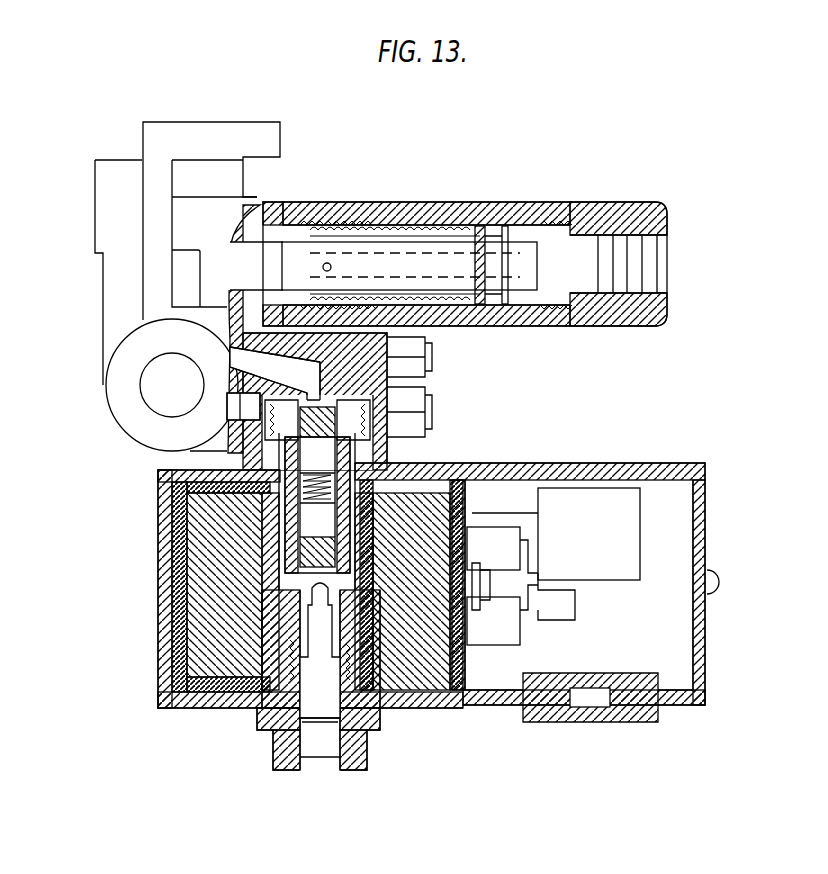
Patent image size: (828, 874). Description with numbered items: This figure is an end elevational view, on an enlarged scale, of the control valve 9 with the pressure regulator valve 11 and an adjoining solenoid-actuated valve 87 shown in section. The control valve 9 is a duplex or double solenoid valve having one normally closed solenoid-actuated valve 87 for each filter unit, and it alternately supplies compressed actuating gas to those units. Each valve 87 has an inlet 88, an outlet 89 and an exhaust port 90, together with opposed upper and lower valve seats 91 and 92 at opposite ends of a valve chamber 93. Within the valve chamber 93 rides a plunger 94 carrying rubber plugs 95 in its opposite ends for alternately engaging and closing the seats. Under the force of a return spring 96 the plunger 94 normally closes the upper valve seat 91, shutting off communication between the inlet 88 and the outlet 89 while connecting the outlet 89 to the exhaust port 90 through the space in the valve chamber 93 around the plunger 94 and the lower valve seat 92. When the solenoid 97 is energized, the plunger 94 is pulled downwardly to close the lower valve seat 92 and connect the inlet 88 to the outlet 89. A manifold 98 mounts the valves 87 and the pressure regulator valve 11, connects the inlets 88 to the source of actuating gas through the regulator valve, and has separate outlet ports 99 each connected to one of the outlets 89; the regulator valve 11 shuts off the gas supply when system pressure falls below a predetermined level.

The control valve 9 is at (405, 592).
The pressure regulator valve 11 is at (667, 222).
The solenoid-actuated valve 87 is at (158, 580).
The inlet 88 is at (257, 357).
The outlet 89 is at (248, 405).
The exhaust port 90 is at (320, 770).
The upper valve seat 91 is at (313, 400).
The lower valve seat 92 is at (337, 583).
The valve chamber 93 is at (350, 477).
The plunger 94 is at (287, 530).
The rubber plugs 95 is at (317, 487).
The return spring 96 is at (357, 420).
The solenoid 97 is at (215, 615).
The manifold 98 is at (186, 122).
The outlet ports 99 is at (122, 407).